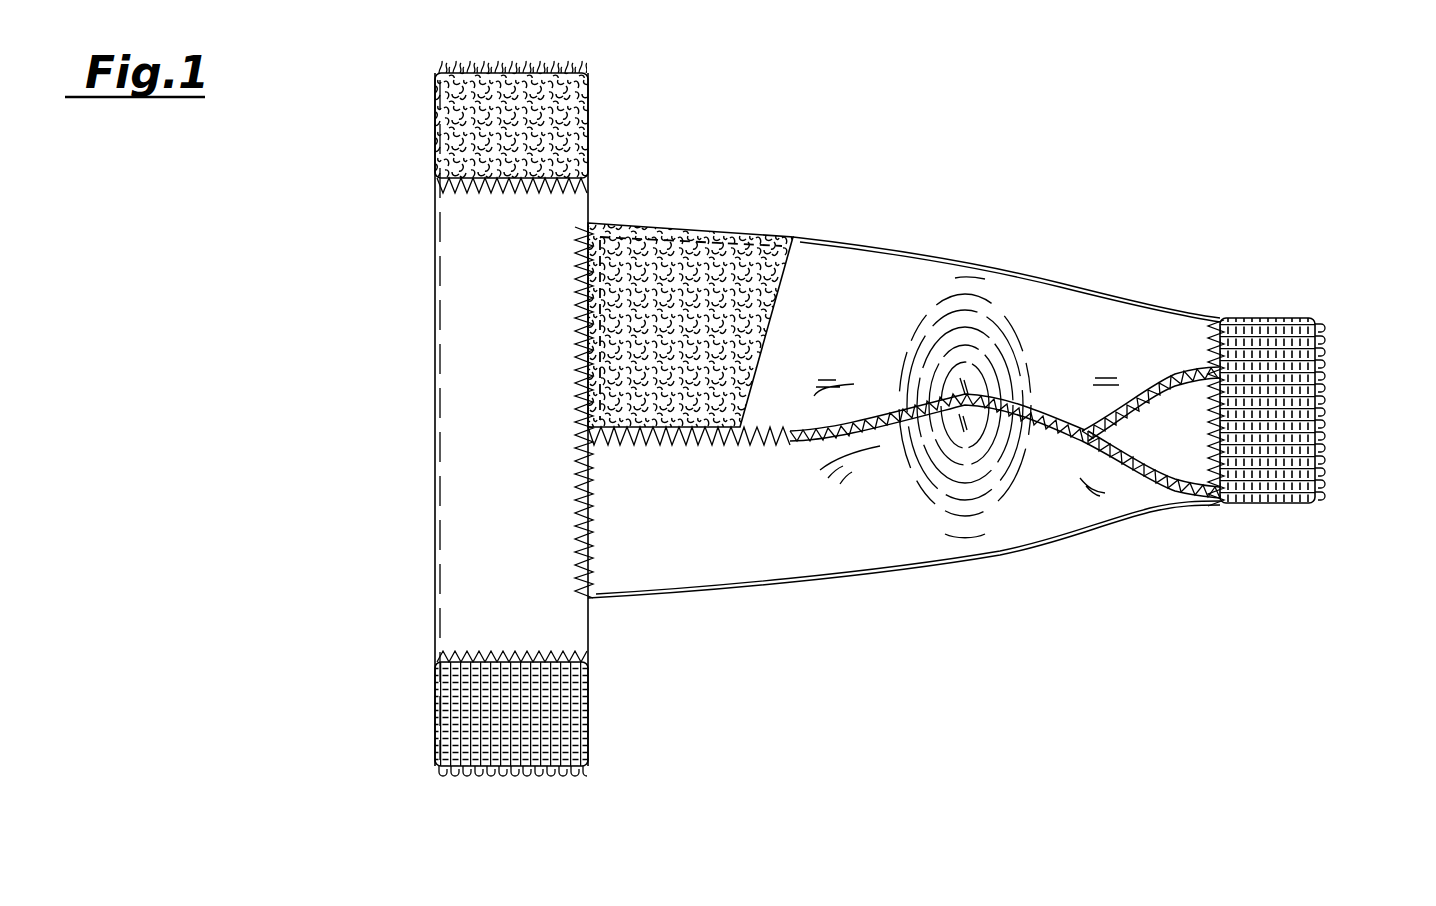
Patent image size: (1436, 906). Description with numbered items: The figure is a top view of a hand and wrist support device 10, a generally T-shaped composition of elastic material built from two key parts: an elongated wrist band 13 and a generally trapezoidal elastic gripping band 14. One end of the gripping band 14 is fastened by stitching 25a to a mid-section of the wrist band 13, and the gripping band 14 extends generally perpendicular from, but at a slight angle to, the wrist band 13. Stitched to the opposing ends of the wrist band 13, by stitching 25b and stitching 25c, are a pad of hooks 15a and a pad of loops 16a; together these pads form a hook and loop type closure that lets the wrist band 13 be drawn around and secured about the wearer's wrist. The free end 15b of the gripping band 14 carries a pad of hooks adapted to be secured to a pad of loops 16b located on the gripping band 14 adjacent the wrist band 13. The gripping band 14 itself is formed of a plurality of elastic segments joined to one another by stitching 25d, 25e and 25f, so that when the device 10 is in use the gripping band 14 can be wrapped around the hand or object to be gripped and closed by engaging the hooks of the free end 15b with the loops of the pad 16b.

The hand and wrist support device 10 is at (1112, 213).
The wrist band 13 is at (498, 387).
The gripping band 14 is at (980, 275).
The pad of hooks 15a is at (498, 700).
The free end pad of hooks 15b is at (1265, 418).
The pad of loops 16a is at (545, 122).
The pad of loops 16b is at (672, 265).
The stitching 25a is at (592, 605).
The stitching 25b is at (458, 170).
The stitching 25c is at (455, 652).
The stitching 25d is at (780, 248).
The stitching 25e is at (1220, 320).
The stitching 25f is at (1185, 500).